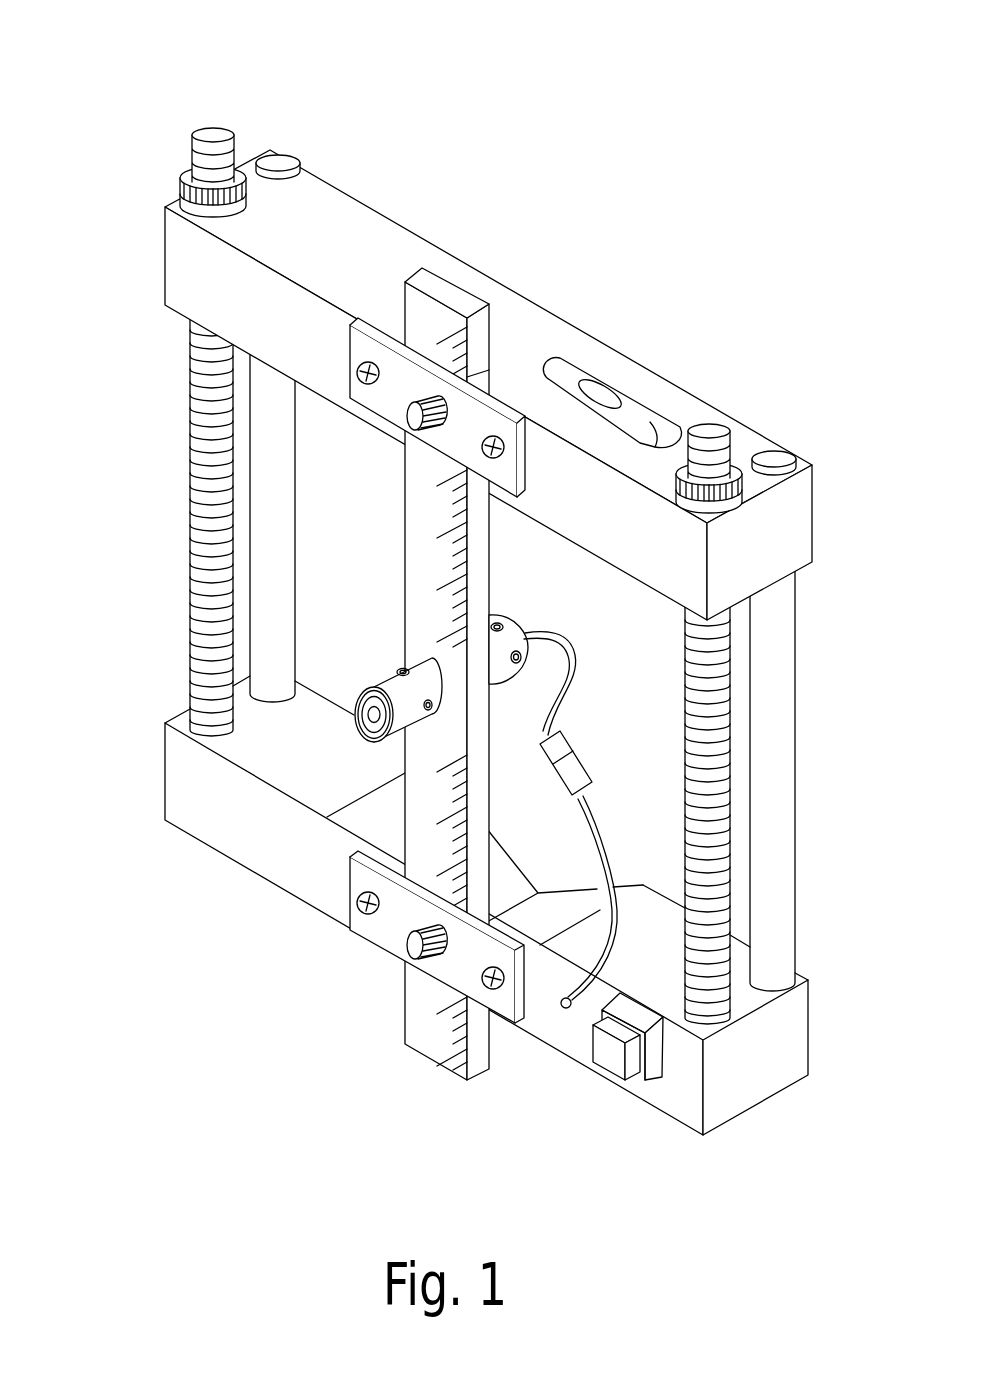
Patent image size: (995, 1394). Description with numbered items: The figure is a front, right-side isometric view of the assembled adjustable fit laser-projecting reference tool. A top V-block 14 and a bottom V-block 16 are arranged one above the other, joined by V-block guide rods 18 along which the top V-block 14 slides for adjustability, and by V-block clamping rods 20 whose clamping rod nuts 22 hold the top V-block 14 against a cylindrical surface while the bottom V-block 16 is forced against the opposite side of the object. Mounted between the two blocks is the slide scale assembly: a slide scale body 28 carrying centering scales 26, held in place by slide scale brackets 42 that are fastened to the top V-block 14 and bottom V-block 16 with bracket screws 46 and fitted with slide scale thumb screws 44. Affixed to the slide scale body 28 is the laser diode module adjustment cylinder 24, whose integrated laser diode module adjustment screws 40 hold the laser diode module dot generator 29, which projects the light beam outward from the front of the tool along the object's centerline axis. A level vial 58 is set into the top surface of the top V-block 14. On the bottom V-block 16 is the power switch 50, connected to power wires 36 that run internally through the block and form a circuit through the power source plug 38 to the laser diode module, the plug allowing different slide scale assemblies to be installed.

The top V-block 14 is at (325, 210).
The bottom V-block 16 is at (182, 776).
The V-block guide rod 18 is at (272, 161).
The V-block clamping rod 20 is at (212, 131).
The clamping rod nut 22 is at (184, 171).
The laser diode module adjustment cylinder 24 is at (388, 683).
The centering scale 26 is at (425, 320).
The slide scale body 28 is at (466, 300).
The laser diode module dot generator 29 is at (362, 704).
The power wires 36 is at (577, 657).
The power source plug 38 is at (571, 741).
The laser diode module adjustment screw 40 is at (404, 669).
The slide scale bracket 42 is at (385, 402).
The slide scale thumb screw 44 is at (420, 418).
The bracket screw 46 is at (357, 375).
The power switch 50 is at (617, 1047).
The level vial 58 is at (567, 373).